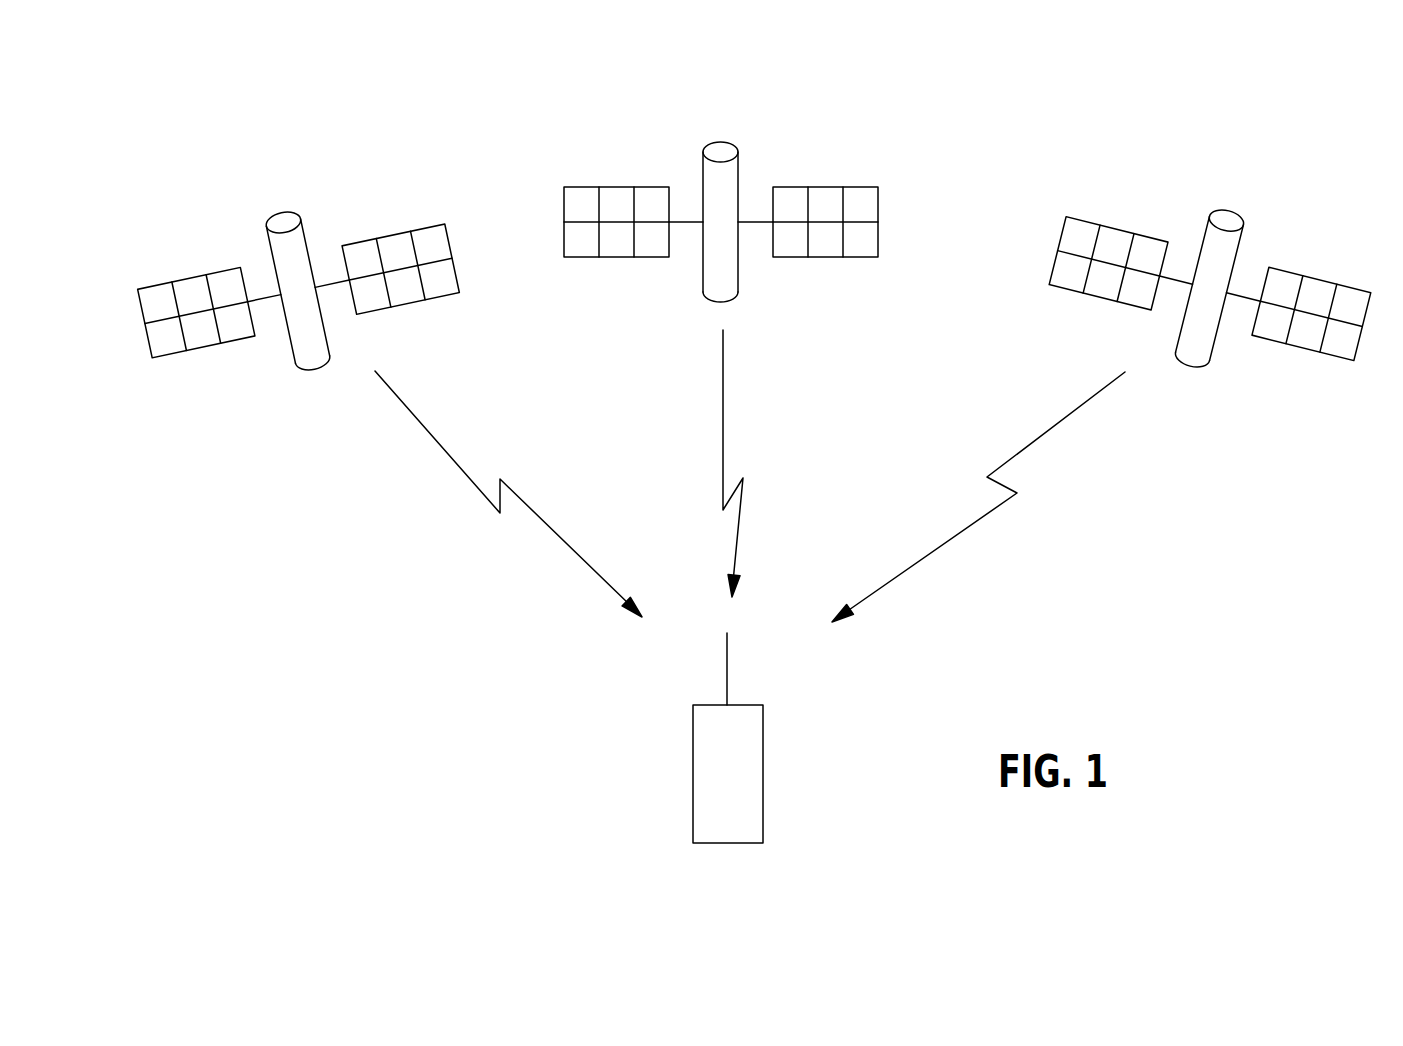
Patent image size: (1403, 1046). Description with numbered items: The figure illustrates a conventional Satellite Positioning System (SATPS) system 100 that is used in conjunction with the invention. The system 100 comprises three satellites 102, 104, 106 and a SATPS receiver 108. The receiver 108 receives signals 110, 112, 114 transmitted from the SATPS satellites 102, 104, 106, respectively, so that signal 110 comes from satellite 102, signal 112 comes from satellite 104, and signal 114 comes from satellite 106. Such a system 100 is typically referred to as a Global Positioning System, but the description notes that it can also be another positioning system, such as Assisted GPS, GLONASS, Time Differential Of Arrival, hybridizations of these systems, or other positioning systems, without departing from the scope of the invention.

The Satellite Positioning System 100 is at (950, 147).
The satellite 102 is at (312, 232).
The satellite 104 is at (742, 182).
The satellite 106 is at (1194, 250).
The SATPS receiver 108 is at (744, 740).
The signal 110 is at (457, 455).
The signal 112 is at (733, 426).
The signal 114 is at (987, 495).